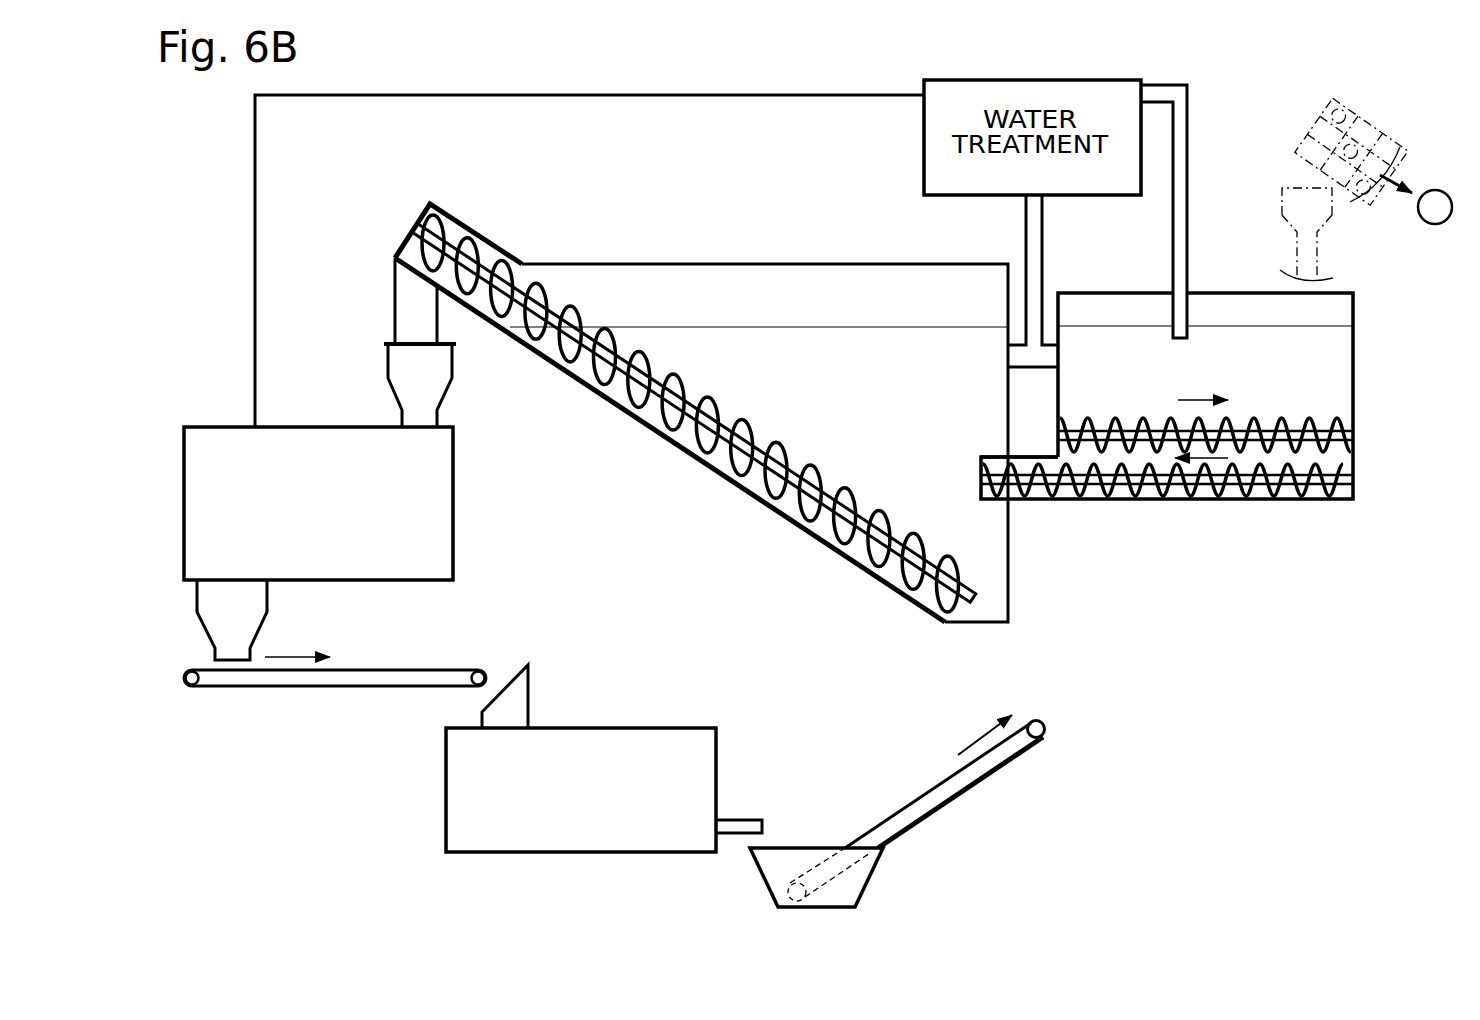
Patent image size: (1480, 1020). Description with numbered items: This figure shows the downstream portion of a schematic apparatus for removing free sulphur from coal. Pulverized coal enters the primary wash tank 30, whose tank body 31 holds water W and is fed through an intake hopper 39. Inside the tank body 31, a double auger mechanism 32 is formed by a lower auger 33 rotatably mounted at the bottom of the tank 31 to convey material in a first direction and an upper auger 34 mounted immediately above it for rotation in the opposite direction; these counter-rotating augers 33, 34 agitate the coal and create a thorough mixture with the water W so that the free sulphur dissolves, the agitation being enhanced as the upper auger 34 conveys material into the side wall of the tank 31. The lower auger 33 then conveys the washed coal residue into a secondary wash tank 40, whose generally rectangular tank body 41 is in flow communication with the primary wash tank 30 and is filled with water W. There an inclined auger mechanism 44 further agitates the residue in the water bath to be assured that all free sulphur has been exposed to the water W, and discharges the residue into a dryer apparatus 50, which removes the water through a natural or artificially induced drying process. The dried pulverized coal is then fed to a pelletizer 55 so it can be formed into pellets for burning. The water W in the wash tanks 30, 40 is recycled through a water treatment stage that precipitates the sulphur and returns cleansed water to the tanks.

The primary wash tank 30 is at (1221, 404).
The tank body 31 is at (1355, 297).
The auger mechanism 32 is at (1362, 459).
The lower auger 33 is at (1160, 485).
The upper auger 34 is at (1322, 432).
The intake hopper 39 is at (1280, 200).
The secondary wash tank 40 is at (685, 407).
The tank body 41 is at (660, 264).
The auger mechanism 44 is at (785, 467).
The dryer apparatus 50 is at (455, 517).
The pelletizer 55 is at (716, 777).
The water W is at (828, 327).